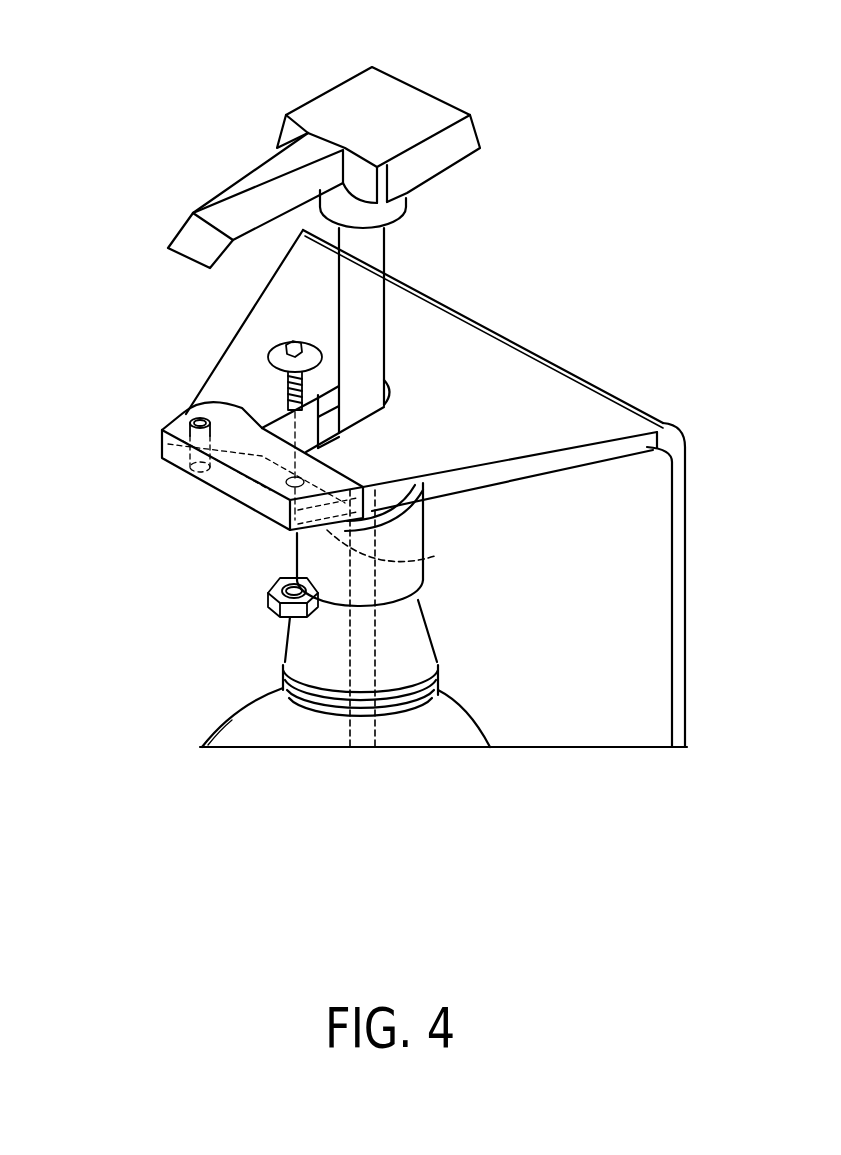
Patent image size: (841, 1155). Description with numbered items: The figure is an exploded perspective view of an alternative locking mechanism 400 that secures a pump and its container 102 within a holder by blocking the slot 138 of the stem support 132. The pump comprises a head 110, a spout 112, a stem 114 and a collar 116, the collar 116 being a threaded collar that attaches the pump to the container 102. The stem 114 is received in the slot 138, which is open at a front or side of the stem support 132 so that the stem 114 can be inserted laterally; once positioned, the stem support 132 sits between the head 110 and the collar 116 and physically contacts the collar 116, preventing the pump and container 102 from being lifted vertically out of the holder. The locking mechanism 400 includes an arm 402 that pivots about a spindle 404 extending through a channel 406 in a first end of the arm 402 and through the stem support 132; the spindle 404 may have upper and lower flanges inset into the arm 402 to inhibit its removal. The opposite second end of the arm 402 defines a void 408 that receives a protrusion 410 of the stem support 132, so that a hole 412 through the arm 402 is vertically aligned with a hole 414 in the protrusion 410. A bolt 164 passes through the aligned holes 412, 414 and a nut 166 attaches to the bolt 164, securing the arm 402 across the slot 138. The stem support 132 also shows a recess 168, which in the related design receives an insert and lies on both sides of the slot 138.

The container 102 is at (445, 727).
The head 110 is at (363, 100).
The spout 112 is at (190, 233).
The stem 114 is at (358, 265).
The collar 116 is at (317, 558).
The stem support 132 is at (292, 296).
The slot 138 is at (220, 503).
The bolt 164 is at (278, 355).
The nut 166 is at (290, 618).
The recess 168 is at (237, 395).
The locking mechanism 400 is at (147, 484).
The arm 402 is at (217, 482).
The spindle 404 is at (190, 424).
The channel 406 is at (186, 414).
The void 408 is at (430, 559).
The protrusion 410 is at (392, 470).
The hole 412 is at (250, 488).
The hole 414 is at (302, 480).